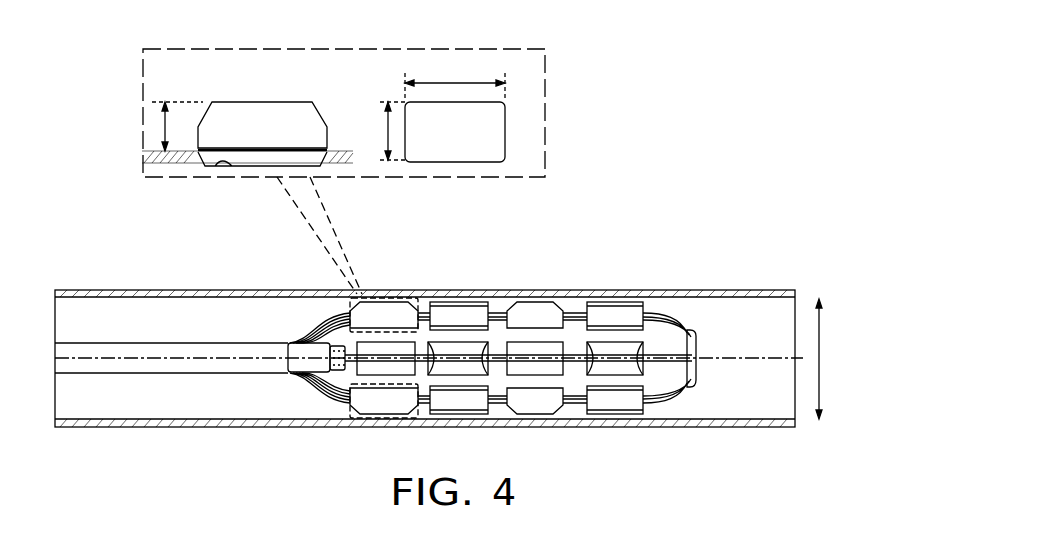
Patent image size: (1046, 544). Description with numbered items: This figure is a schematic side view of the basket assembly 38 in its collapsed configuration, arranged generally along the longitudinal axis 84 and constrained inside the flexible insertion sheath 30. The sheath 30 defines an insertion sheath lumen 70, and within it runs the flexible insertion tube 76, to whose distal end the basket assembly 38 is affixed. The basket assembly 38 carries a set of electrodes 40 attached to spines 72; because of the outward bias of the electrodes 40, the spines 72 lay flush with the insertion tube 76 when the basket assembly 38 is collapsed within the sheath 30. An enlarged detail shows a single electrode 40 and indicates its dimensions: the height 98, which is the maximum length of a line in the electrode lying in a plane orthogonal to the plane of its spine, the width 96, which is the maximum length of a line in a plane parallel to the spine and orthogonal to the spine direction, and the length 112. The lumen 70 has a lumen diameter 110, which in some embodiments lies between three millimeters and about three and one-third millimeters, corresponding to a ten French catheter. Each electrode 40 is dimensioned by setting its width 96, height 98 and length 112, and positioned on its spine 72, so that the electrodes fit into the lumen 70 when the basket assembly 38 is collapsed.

The insertion sheath 30 is at (236, 426).
The basket assembly 38 is at (566, 290).
The electrodes 40 is at (275, 143).
The insertion sheath lumen 70 is at (511, 283).
The spines 72 is at (670, 397).
The insertion tube 76 is at (157, 375).
The longitudinal axis 84 is at (80, 358).
The width 96 is at (385, 130).
The height 98 is at (163, 132).
The lumen diameter 110 is at (821, 358).
The length 112 is at (452, 82).